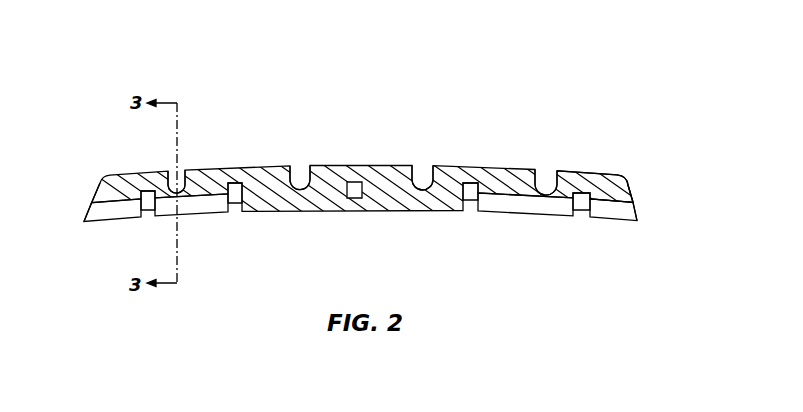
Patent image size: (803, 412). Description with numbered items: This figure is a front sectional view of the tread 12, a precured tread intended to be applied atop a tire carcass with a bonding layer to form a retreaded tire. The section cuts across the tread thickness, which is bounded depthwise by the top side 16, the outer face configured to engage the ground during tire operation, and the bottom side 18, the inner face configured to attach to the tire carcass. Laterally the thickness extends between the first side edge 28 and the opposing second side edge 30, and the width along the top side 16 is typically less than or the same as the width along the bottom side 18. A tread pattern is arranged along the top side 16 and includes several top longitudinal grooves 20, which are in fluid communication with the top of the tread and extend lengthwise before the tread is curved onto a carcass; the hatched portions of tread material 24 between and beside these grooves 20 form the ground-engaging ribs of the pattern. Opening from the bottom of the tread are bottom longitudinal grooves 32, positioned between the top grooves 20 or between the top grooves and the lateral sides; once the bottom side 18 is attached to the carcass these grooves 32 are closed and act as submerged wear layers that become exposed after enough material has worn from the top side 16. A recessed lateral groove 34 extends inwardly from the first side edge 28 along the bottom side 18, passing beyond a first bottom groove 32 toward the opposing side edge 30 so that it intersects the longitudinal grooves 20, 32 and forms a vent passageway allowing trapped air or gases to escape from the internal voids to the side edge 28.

The tread 12 is at (598, 82).
The top side 16 is at (597, 173).
The bottom side 18 is at (602, 222).
The top longitudinal grooves 20 is at (177, 176).
The tread layer segments 24 is at (108, 177).
The first side edge 28 is at (97, 198).
The second side edge 30 is at (632, 198).
The bottom longitudinal grooves 32 is at (148, 202).
The recessed lateral grooves 34 is at (112, 212).